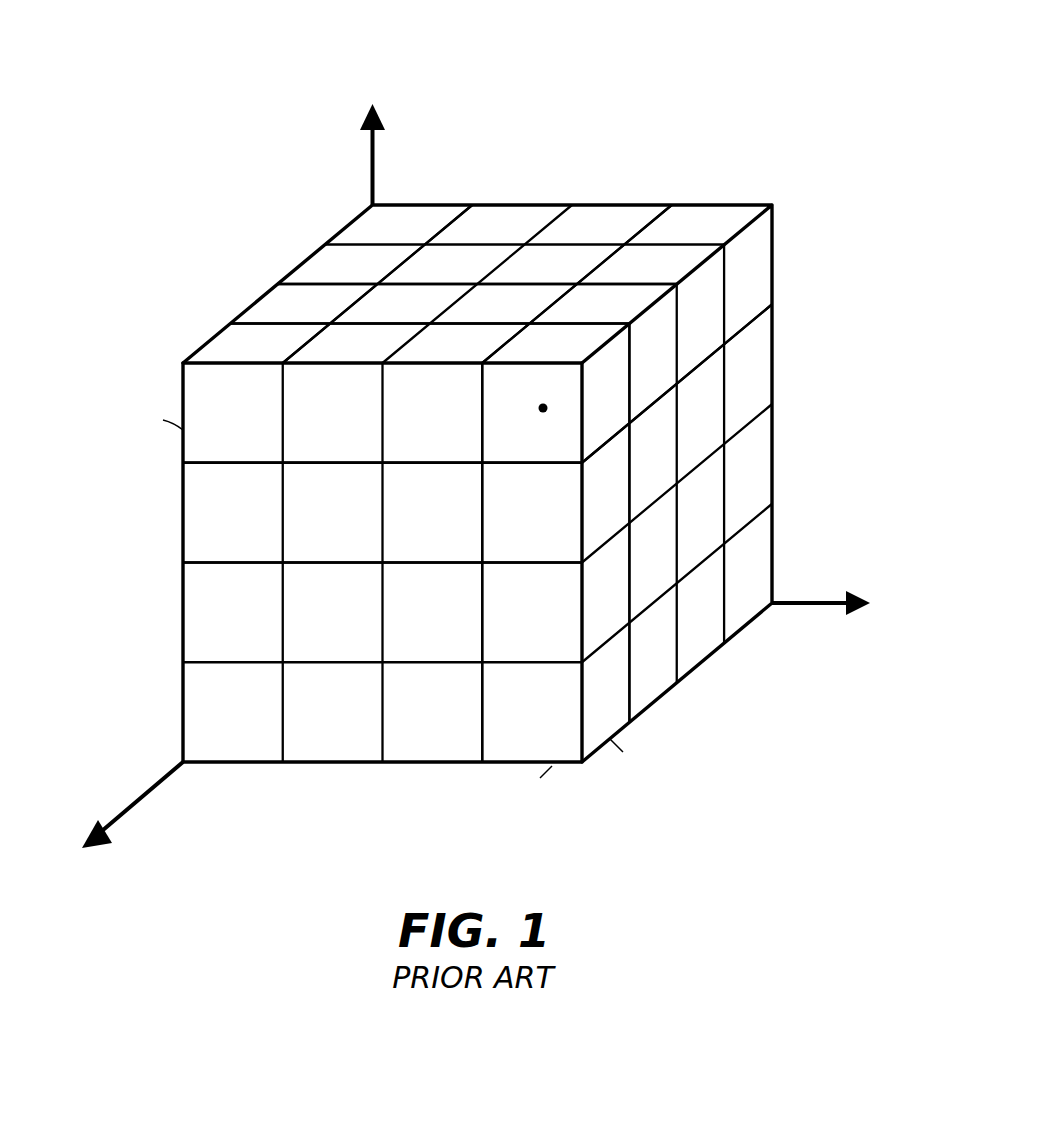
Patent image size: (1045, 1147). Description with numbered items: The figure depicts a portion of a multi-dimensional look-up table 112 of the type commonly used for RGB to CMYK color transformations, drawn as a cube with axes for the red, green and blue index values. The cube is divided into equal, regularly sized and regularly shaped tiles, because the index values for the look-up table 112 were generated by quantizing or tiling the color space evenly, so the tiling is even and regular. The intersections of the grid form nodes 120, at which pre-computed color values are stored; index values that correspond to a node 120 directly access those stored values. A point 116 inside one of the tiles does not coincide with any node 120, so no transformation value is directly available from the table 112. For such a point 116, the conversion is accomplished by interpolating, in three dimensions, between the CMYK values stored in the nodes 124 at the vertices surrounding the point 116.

The look-up table 112 is at (680, 62).
The point 116 is at (543, 408).
The nodes 120 is at (425, 243).
The nodes 124 is at (483, 362).